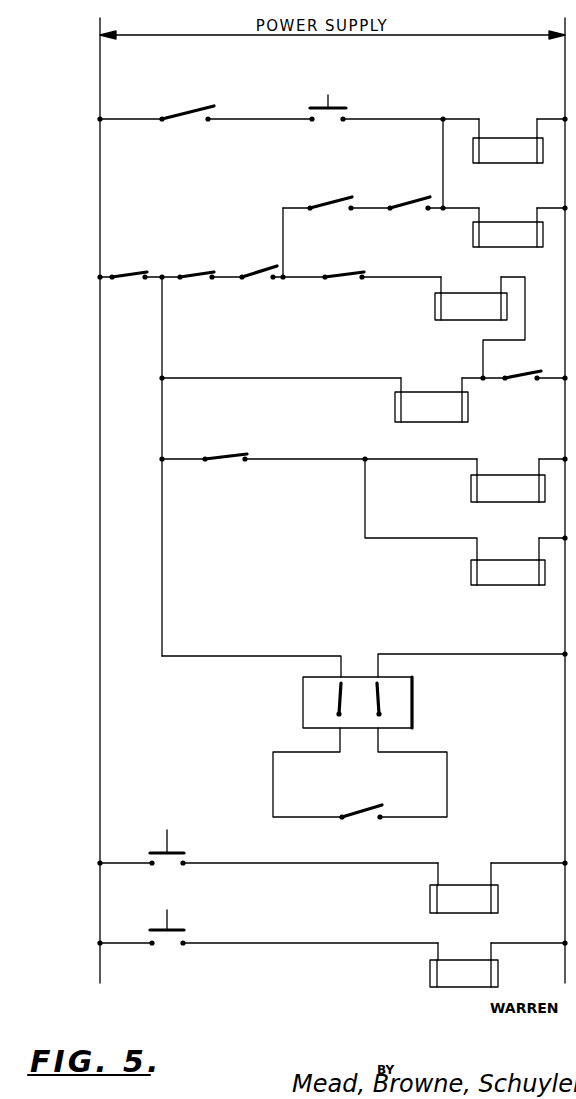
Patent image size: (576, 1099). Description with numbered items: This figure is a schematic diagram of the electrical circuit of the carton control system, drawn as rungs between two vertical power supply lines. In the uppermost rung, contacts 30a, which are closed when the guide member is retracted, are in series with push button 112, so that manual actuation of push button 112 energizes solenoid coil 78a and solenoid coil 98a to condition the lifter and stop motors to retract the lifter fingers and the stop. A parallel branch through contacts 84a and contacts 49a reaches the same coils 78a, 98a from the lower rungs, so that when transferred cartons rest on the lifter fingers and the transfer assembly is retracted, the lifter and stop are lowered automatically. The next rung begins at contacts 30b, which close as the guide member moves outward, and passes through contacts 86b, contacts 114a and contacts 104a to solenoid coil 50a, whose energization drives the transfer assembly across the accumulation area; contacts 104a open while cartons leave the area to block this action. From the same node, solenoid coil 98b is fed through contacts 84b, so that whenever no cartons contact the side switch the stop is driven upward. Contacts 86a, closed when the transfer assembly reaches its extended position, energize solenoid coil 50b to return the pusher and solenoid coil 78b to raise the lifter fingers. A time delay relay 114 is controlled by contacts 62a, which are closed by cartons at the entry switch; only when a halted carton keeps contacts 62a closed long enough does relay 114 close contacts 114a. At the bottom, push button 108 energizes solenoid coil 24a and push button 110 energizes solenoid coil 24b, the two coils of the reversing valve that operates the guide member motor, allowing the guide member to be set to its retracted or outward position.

The contacts 30a is at (191, 92).
The push button 112 is at (336, 106).
The solenoid coil 78a is at (519, 124).
The contacts 84a is at (331, 199).
The contacts 49a is at (419, 199).
The solenoid coil 98a is at (492, 232).
The contacts 30b is at (147, 256).
The contacts 86b is at (217, 256).
The contacts 114a is at (275, 256).
The contacts 104a is at (357, 256).
The solenoid coil 50a is at (456, 301).
The solenoid coil 98b is at (414, 399).
The contacts 84b is at (532, 362).
The contacts 86a is at (234, 435).
The solenoid coil 50b is at (496, 483).
The solenoid coil 78b is at (525, 550).
The time delay relay 114 is at (394, 709).
The contacts 62a is at (360, 812).
The push button 108 is at (168, 850).
The solenoid coil 24a is at (449, 893).
The push button 110 is at (168, 928).
The solenoid coil 24b is at (481, 950).